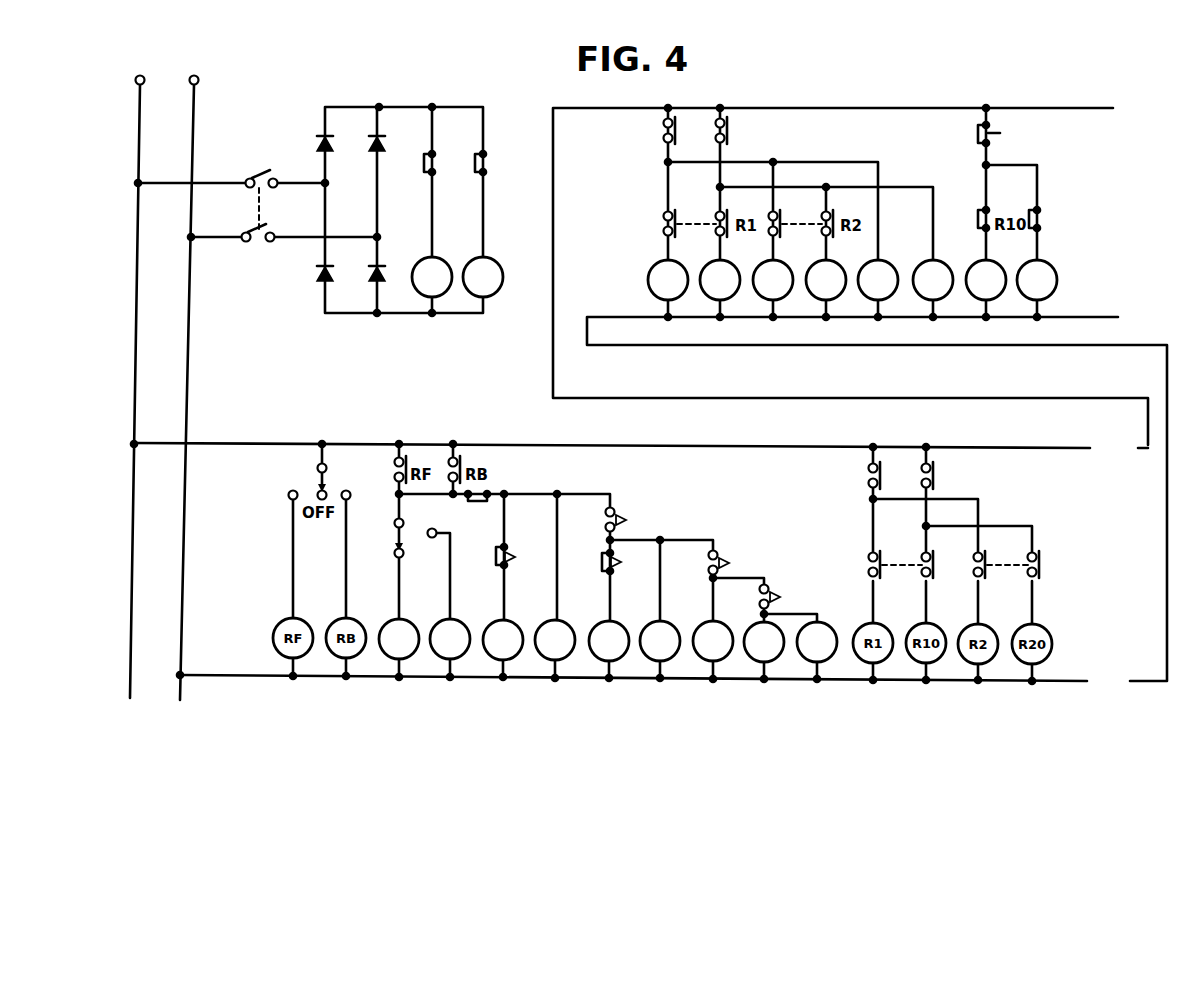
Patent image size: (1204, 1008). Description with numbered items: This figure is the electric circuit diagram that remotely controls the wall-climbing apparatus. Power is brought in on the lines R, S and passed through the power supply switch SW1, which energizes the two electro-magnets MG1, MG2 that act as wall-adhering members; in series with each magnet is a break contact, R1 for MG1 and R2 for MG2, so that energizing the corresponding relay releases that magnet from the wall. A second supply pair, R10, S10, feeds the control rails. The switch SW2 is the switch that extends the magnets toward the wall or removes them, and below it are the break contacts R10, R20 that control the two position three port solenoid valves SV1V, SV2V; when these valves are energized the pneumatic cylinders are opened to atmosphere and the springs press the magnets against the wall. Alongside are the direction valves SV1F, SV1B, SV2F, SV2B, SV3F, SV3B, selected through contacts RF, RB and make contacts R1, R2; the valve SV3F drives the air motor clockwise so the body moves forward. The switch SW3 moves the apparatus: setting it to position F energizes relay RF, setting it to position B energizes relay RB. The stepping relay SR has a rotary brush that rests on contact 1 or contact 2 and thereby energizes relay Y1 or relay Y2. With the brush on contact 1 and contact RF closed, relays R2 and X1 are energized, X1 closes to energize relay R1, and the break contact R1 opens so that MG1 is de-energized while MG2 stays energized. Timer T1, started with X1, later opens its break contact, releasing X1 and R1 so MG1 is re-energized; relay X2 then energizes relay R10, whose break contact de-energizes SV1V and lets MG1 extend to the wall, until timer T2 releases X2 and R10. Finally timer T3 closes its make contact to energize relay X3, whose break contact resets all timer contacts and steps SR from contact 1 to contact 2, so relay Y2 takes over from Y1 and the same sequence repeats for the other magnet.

The power line R is at (137, 376).
The power line S is at (189, 379).
The power supply switch SW1 is at (257, 194).
The relay R1 is at (443, 163).
The relay R2 is at (494, 163).
The electro-magnet MG1 is at (432, 277).
The electro-magnet MG2 is at (483, 277).
The relay R10 is at (641, 272).
The S10 supply line S10 is at (673, 494).
The relay RF is at (683, 132).
The backward relay RB is at (735, 132).
The switch to extend and remove the magnets SW2 is at (1010, 134).
The relay R20 is at (1053, 220).
The solenoid valve SV1F is at (668, 280).
The solenoid valve SV1B is at (720, 280).
The solenoid valve SV2F is at (773, 280).
The solenoid valve SV2B is at (826, 280).
The solenoid valve SV3F is at (878, 280).
The solenoid valve SV3B is at (933, 280).
The two position three port solenoid valve SV1V is at (986, 280).
The two position three port solenoid valve SV2V is at (1037, 280).
The switch to move the apparatus SW3 is at (343, 472).
The position F is at (292, 545).
The backward position B is at (354, 552).
The stepping relay SR is at (576, 591).
The relay X3 is at (649, 581).
The contact 1 is at (411, 558).
The contact 2 is at (436, 524).
The timer T1 is at (574, 584).
The timer T2 is at (679, 605).
The timer T3 is at (748, 623).
The relay X1 is at (695, 561).
The relay X2 is at (775, 561).
The relay Y1 is at (670, 611).
The relay Y2 is at (750, 611).